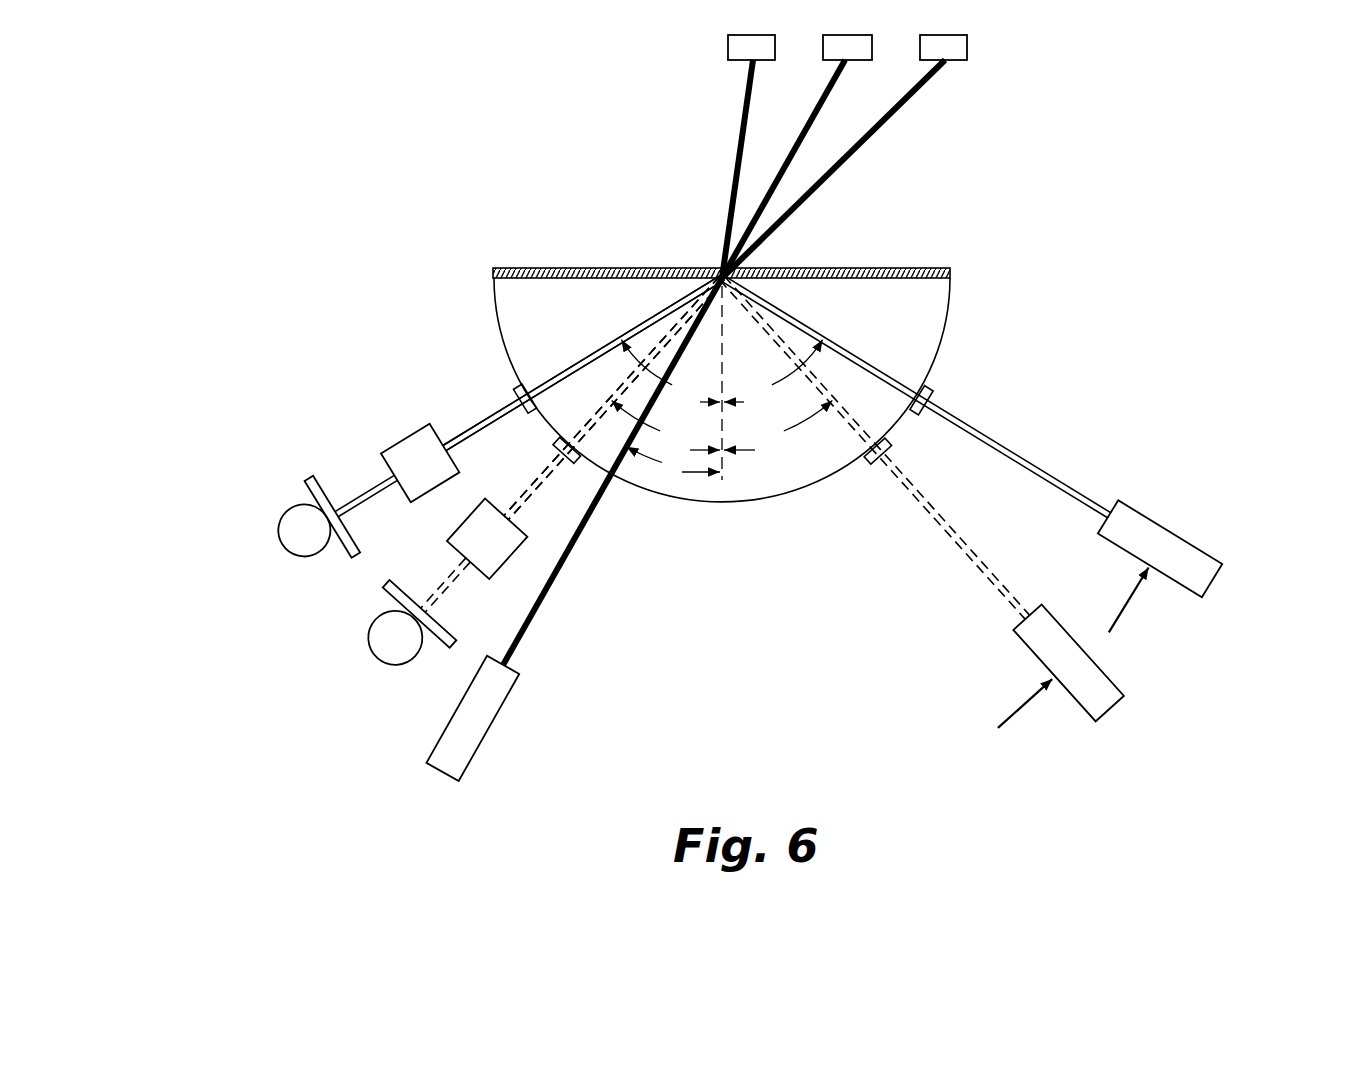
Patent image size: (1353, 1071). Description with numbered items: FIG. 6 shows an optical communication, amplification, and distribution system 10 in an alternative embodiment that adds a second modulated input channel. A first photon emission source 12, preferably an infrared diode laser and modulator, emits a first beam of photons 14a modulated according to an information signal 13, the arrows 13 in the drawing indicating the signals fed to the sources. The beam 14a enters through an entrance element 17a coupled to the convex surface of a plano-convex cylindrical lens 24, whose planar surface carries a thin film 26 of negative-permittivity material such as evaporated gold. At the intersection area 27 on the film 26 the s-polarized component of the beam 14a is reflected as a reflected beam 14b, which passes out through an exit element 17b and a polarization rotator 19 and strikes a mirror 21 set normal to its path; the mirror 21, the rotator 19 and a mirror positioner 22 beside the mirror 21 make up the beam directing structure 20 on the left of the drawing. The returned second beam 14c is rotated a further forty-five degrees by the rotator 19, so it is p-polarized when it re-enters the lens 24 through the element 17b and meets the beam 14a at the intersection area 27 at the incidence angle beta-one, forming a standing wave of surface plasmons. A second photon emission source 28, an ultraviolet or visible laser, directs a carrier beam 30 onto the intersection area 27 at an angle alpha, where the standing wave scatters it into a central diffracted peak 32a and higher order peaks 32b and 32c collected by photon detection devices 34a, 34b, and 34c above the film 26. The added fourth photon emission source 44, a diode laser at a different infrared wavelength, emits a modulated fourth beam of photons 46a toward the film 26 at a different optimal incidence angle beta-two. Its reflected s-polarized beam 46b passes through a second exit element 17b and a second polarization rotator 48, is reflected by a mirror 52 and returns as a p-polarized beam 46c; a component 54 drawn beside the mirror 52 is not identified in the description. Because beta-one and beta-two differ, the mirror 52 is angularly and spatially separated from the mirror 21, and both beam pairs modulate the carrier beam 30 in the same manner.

The optical communication, amplification, and distribution system 10 is at (1274, 120).
The first photon emission source 12 is at (1157, 527).
The information signal 13 is at (1118, 612).
The first beam of photons 14a is at (1000, 443).
The reflected beam 14b is at (476, 428).
The second beam of photons 14c is at (583, 362).
The entrance element 17a is at (931, 398).
The exit element 17b is at (516, 394).
The polarization rotator 19 is at (399, 447).
The beam directing structure 20 is at (244, 466).
The mirror 21 is at (349, 552).
The mirror positioner 22 is at (281, 536).
The plano-convex cylindrical lens 24 is at (939, 350).
The thin film 26 is at (951, 275).
The intersection area 27 is at (758, 261).
The second photon emission source 28 is at (497, 714).
The carrier beam 30 is at (557, 575).
The central diffracted energy peak 32a is at (826, 100).
The higher order diffracted peak 32b is at (911, 98).
The higher order diffracted peak 32c is at (747, 100).
The photon detection device 34a is at (848, 62).
The photon detection device 34b is at (948, 62).
The photon detection device 34c is at (758, 62).
The fourth photon emission source 44 is at (1112, 685).
The fourth beam of photons 46a is at (968, 545).
The reflected beam 46b is at (517, 503).
The p-polarized beam 46c is at (614, 397).
The polarization rotator 48 is at (462, 553).
The mirror 52 is at (446, 650).
The detector 54 is at (373, 642).